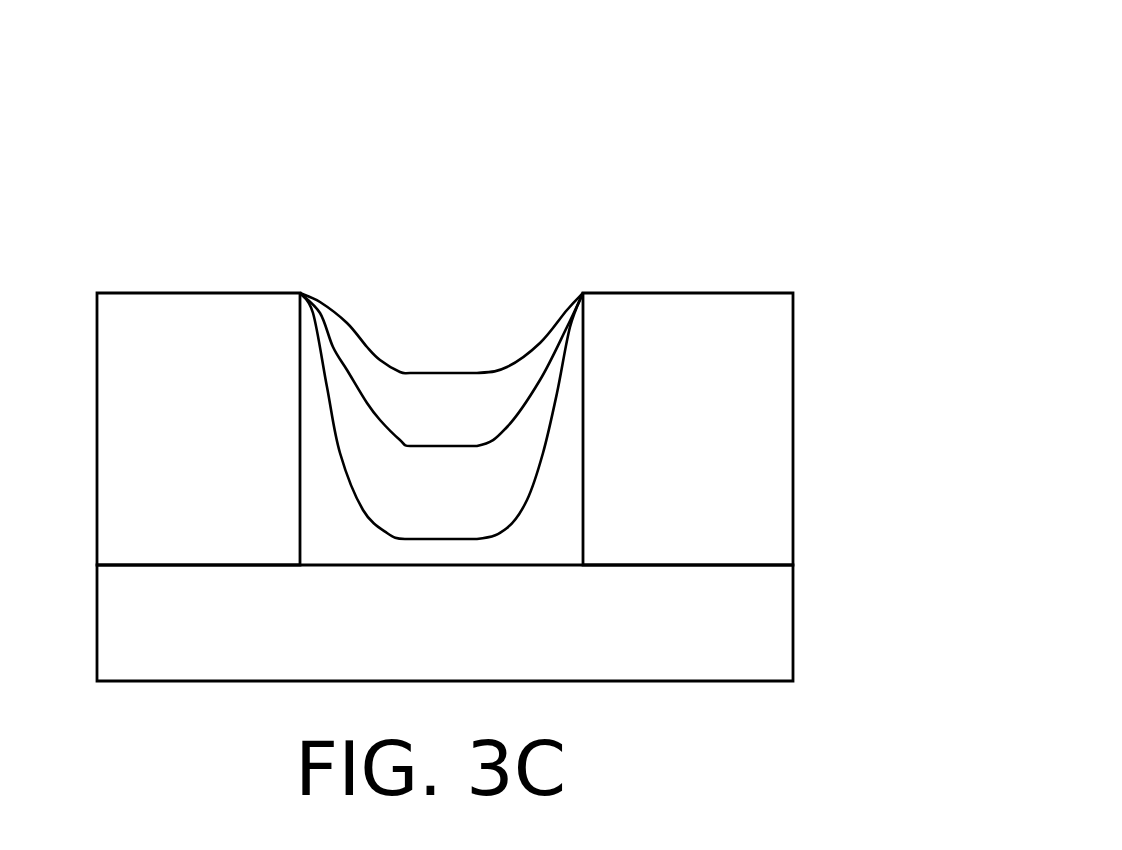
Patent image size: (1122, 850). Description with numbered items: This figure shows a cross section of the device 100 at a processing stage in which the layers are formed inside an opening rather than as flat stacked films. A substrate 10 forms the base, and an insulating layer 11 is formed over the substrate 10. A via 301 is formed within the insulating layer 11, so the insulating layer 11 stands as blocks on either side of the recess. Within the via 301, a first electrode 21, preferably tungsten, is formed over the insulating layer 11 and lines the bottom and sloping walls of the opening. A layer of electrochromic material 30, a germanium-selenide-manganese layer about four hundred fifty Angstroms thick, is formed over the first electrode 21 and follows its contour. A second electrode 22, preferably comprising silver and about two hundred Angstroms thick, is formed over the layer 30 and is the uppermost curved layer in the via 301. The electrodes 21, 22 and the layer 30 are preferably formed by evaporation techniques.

The semiconductor device structure 100 is at (506, 351).
The via 301 is at (399, 336).
The insulating layer 11 is at (725, 455).
The substrate 10 is at (652, 661).
The first electrode 21 is at (582, 550).
The electrochromic material layer 30 is at (514, 508).
The second electrode 22 is at (476, 427).